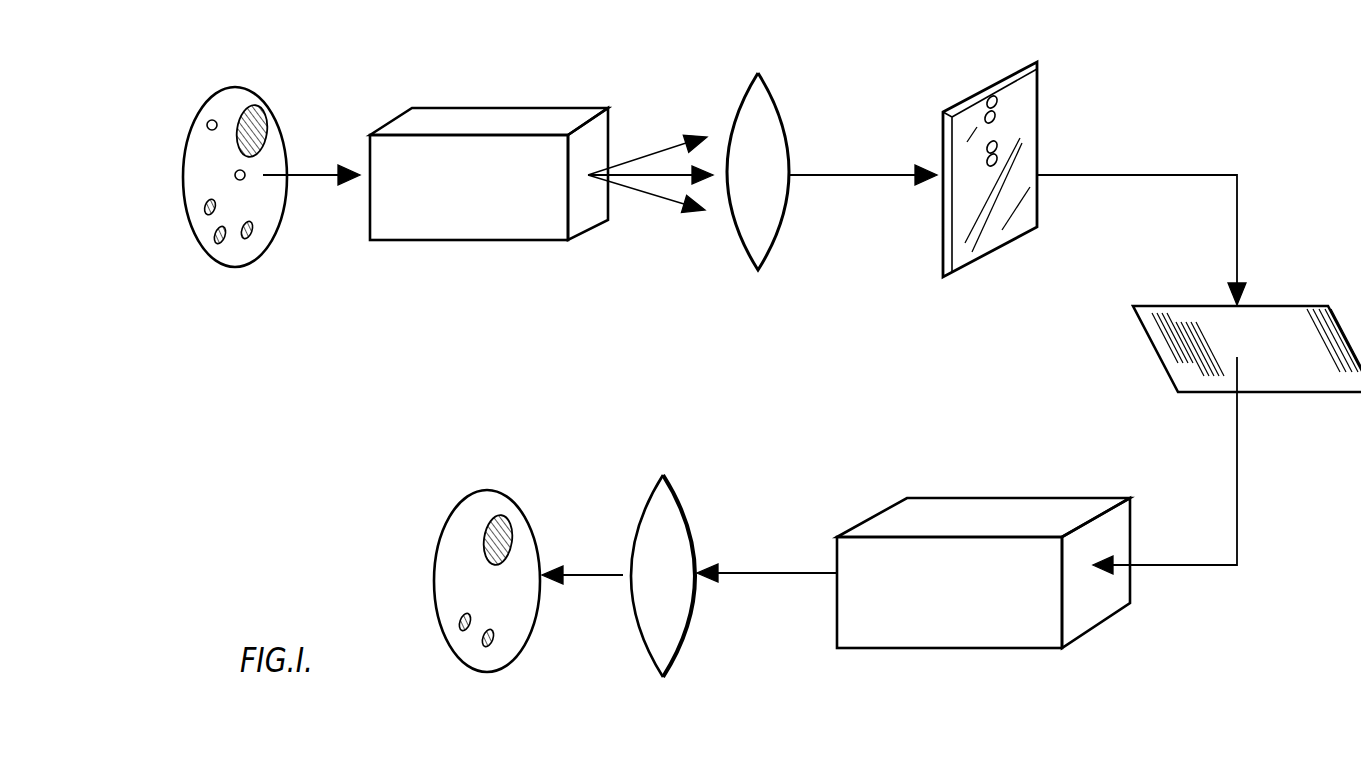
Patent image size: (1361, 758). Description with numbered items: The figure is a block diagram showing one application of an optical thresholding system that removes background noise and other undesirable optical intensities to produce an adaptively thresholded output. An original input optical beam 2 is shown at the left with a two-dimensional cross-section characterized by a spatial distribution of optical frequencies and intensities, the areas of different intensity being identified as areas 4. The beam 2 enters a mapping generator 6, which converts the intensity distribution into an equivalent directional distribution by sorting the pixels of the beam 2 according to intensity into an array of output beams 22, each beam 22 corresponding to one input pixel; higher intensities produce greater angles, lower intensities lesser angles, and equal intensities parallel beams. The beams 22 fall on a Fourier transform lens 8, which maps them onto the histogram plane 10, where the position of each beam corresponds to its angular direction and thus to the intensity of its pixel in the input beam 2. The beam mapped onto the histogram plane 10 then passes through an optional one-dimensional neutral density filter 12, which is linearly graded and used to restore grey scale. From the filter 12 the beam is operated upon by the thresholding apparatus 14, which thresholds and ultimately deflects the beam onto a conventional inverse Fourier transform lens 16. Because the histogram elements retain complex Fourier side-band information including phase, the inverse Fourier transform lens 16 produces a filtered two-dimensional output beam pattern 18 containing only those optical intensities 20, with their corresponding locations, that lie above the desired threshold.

The input optical beam 2 is at (267, 247).
The areas of different intensity 4 is at (238, 170).
The mapping generator 6 is at (507, 108).
The Fourier transform lens 8 is at (743, 85).
The histogram plane 10 is at (990, 88).
The one-dimensional neutral density filter 12 is at (1175, 305).
The thresholding apparatus 14 is at (965, 497).
The inverse Fourier transform lens 16 is at (673, 493).
The output beam pattern 18 is at (530, 643).
The optical intensities 20 is at (462, 613).
The output beams 22 is at (642, 178).